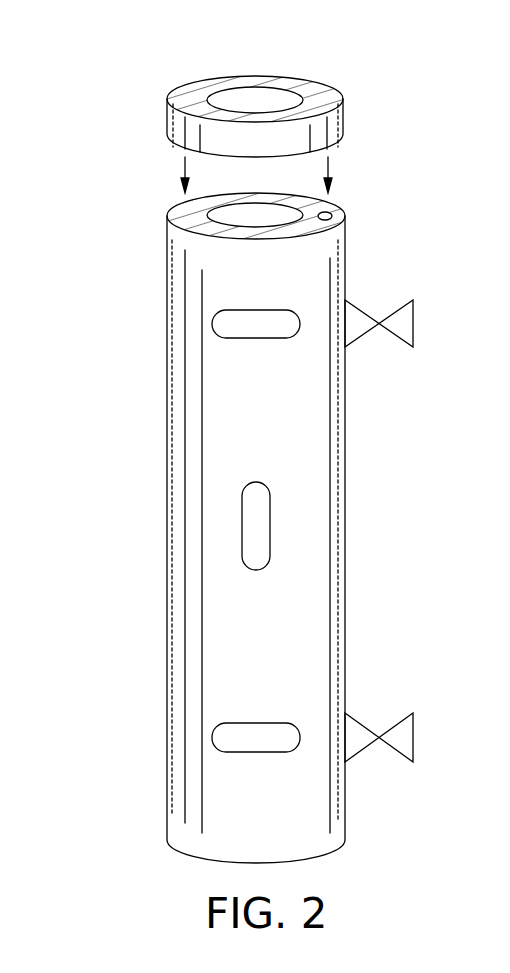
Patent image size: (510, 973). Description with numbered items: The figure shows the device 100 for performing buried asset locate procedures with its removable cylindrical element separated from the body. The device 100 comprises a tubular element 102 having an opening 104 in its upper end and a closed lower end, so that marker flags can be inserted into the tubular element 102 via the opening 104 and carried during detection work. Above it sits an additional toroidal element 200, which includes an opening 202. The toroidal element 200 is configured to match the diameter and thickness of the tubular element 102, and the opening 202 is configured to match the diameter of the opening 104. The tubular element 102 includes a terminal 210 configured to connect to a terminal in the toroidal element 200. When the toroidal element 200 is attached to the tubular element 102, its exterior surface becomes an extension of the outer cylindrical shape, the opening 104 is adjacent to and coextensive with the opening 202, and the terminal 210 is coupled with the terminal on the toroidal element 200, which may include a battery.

The device 100 is at (135, 66).
The tubular element 102 is at (256, 528).
The opening 104 is at (210, 216).
The toroidal element 200 is at (306, 108).
The opening 202 is at (300, 97).
The terminal 210 is at (324, 213).